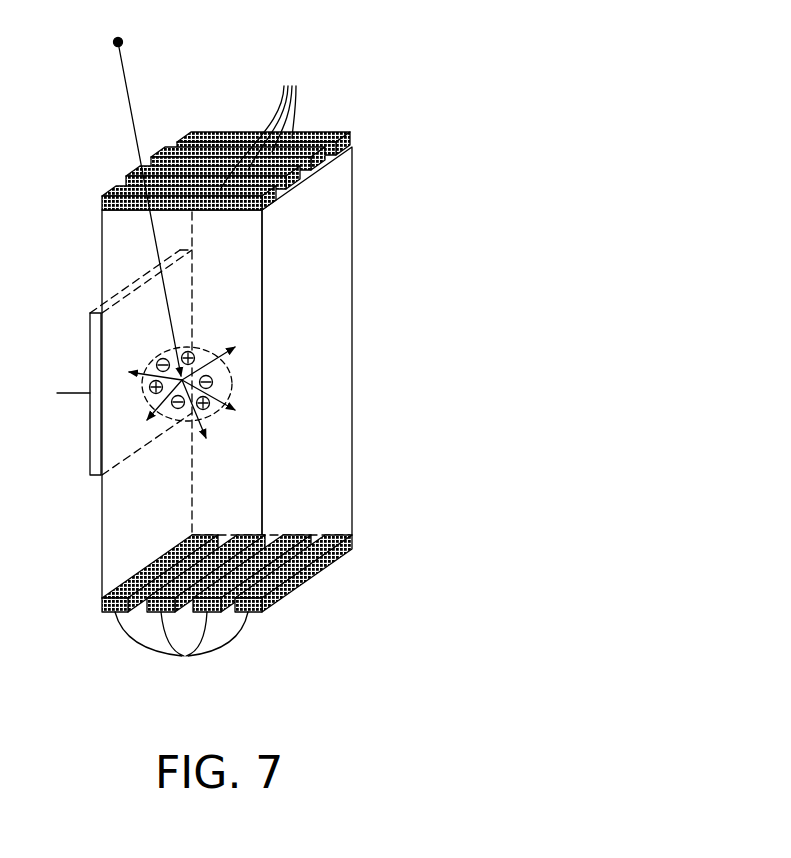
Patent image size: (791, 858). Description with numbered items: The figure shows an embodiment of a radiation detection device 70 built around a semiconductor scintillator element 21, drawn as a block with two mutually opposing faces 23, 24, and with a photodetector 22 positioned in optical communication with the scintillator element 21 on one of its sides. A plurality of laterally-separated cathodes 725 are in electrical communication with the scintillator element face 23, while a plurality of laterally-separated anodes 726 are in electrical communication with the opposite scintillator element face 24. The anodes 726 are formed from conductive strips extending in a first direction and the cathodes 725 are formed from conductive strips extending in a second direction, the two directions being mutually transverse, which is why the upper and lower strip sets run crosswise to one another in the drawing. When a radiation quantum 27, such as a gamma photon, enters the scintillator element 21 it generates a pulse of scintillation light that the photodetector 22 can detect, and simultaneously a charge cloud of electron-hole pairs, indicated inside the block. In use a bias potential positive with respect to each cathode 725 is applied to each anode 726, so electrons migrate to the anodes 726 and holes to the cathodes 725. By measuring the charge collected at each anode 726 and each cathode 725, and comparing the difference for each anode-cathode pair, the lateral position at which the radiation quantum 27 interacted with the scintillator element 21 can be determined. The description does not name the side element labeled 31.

The ion trap device 70 is at (388, 58).
The semiconductor scintillator element 21 is at (113, 258).
The photodetector 22 is at (97, 337).
The scintillator element face 23 is at (329, 174).
The scintillator element face 24 is at (148, 587).
The radiation quantum 27 is at (112, 42).
The side wall 31 is at (342, 458).
The laterally-separated cathodes 725 is at (268, 125).
The laterally-separated anodes 726 is at (181, 650).